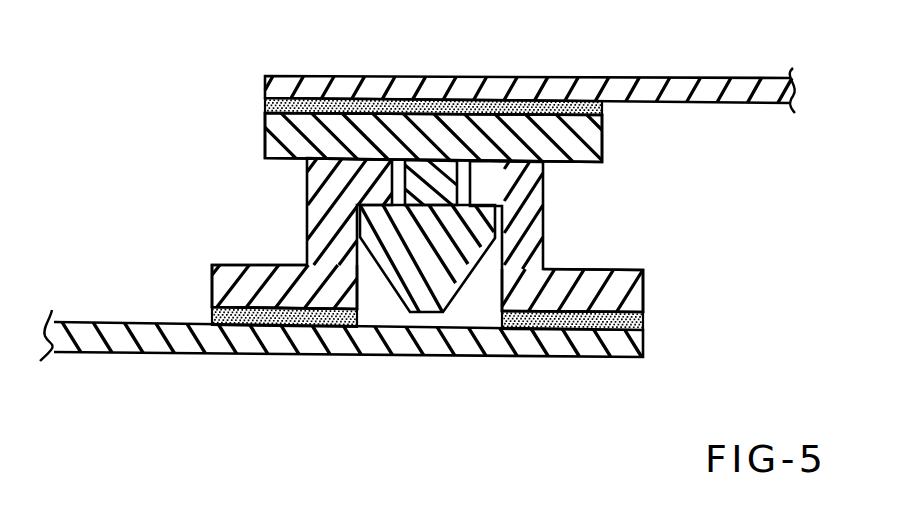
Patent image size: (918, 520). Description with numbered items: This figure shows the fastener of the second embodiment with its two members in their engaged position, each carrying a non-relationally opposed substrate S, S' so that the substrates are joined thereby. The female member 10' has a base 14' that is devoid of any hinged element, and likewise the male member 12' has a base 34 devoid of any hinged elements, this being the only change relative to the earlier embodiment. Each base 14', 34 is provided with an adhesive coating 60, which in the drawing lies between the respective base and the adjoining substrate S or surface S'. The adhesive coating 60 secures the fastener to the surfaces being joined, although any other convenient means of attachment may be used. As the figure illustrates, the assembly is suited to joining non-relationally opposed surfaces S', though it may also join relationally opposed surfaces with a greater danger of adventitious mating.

The substrate S is at (546, 61).
The non-relationally opposed surface S' is at (341, 373).
The adhesive coating 60 is at (263, 105).
The base 34 is at (262, 142).
The male member 12' is at (499, 148).
The female member 10' is at (443, 235).
The base 14' is at (493, 268).